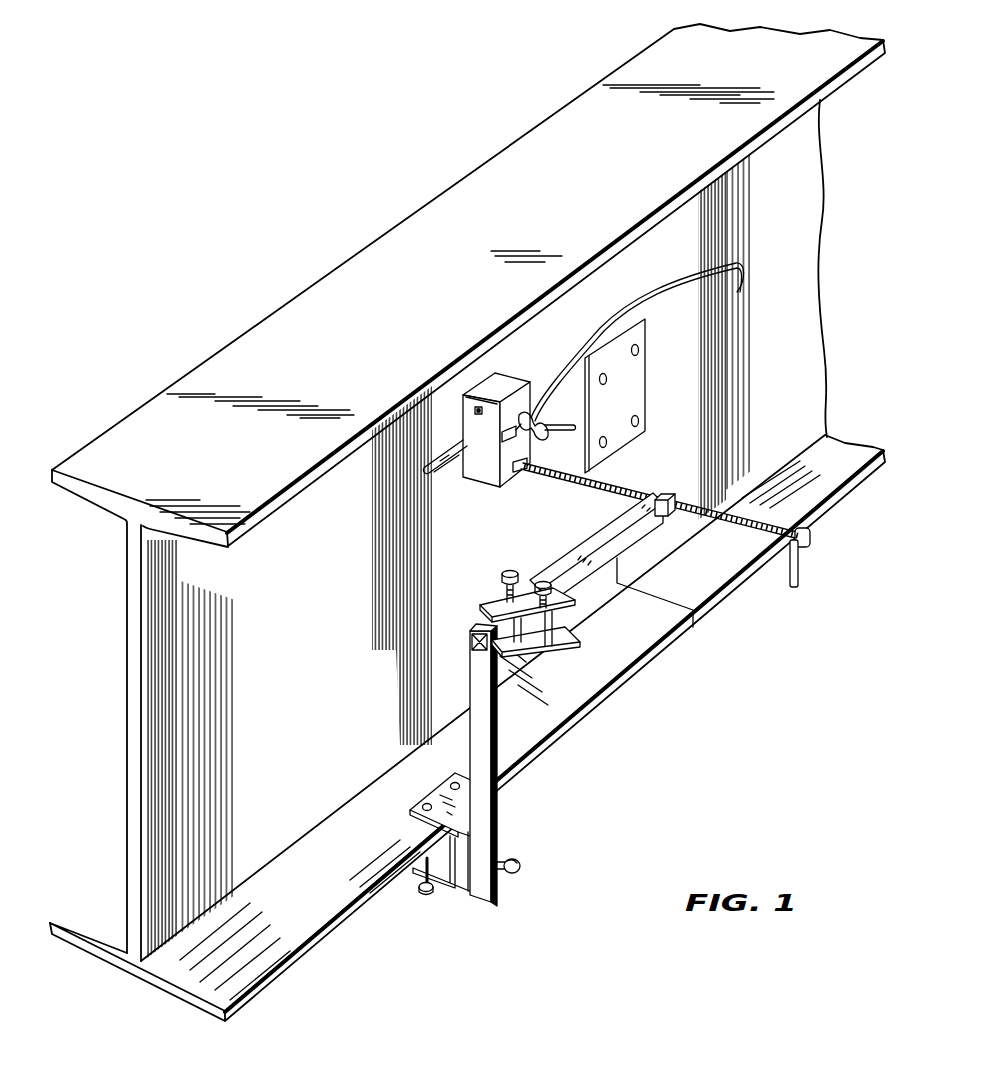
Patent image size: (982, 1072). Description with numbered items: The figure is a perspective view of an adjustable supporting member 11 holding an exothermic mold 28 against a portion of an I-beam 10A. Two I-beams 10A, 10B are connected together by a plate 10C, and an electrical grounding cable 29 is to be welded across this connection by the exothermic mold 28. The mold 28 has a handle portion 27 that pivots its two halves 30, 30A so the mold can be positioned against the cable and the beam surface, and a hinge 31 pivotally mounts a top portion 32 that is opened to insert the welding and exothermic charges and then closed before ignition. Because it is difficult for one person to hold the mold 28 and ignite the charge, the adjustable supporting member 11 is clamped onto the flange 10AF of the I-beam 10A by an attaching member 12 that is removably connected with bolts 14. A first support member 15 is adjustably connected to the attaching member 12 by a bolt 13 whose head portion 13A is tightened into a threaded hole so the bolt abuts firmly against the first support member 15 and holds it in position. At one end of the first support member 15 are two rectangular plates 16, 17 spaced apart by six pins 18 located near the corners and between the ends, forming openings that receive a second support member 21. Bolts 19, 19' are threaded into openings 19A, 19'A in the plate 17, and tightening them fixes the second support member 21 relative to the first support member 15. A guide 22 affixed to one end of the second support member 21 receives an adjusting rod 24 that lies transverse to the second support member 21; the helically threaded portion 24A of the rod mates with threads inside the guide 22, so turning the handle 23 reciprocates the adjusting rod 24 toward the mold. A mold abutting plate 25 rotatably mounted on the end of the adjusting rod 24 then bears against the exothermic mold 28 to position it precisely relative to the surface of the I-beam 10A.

The I-beam 10A is at (116, 709).
The flange 10AF is at (169, 984).
The I-beam 10B is at (802, 203).
The plate 10C is at (632, 382).
The adjustable supporting member 11 is at (594, 659).
The attaching member 12 is at (455, 904).
The bolt 13 is at (524, 869).
The head portion 13A is at (516, 861).
The bolts 14 is at (425, 897).
The first support member 15 is at (506, 740).
The plate 16 is at (535, 678).
The plate 17 is at (480, 609).
The pins 18 is at (548, 657).
The bolt 19 is at (495, 566).
The bolt 19' is at (581, 601).
The opening 19A is at (499, 593).
The opening 19'A is at (592, 628).
The second support member 21 is at (640, 537).
The guide 22 is at (671, 496).
The handle 23 is at (800, 570).
The adjusting rod 24 is at (736, 510).
The helically threaded portion 24A is at (601, 484).
The mold abutting plate 25 is at (515, 478).
The handle portion 27 is at (532, 434).
The exothermic mold 28 is at (455, 431).
The electrical grounding cable 29 is at (427, 474).
The mold half 30 is at (478, 473).
The mold half 30A is at (537, 368).
The hinge 31 is at (474, 409).
The top portion 32 is at (507, 382).